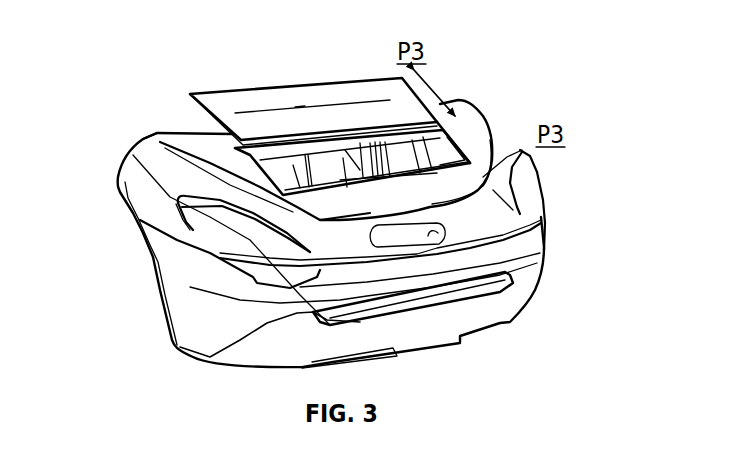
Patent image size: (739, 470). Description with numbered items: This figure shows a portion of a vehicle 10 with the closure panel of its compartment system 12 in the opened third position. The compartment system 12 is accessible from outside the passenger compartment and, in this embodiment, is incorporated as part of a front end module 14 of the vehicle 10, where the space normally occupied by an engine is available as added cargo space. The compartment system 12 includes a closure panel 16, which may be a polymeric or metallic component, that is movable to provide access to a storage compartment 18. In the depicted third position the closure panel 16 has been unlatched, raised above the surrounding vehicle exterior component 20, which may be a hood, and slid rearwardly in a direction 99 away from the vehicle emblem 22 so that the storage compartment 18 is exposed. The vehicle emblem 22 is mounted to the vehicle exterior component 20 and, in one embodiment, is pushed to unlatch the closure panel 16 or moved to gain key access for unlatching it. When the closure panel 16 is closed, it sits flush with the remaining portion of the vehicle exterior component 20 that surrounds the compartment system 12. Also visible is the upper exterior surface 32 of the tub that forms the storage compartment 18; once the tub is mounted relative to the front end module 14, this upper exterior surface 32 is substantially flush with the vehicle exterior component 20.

The vehicle 10 is at (533, 40).
The compartment system 12 is at (445, 158).
The front end module 14 is at (120, 137).
The closure panel 16 is at (315, 108).
The storage compartment 18 is at (453, 147).
The vehicle exterior component 20 is at (197, 188).
The vehicle emblem 22 is at (430, 223).
The upper exterior surface 32 is at (488, 172).
The direction 99 is at (217, 133).